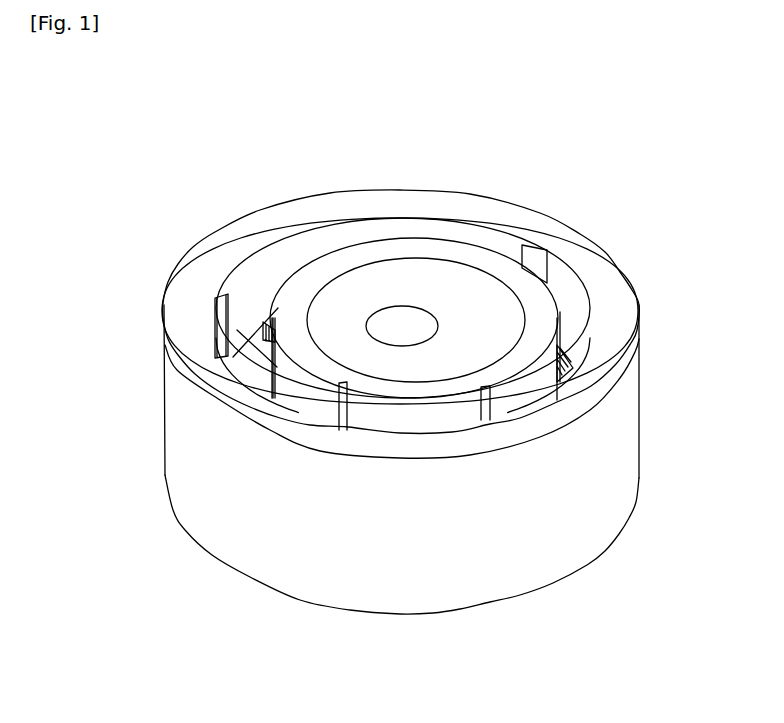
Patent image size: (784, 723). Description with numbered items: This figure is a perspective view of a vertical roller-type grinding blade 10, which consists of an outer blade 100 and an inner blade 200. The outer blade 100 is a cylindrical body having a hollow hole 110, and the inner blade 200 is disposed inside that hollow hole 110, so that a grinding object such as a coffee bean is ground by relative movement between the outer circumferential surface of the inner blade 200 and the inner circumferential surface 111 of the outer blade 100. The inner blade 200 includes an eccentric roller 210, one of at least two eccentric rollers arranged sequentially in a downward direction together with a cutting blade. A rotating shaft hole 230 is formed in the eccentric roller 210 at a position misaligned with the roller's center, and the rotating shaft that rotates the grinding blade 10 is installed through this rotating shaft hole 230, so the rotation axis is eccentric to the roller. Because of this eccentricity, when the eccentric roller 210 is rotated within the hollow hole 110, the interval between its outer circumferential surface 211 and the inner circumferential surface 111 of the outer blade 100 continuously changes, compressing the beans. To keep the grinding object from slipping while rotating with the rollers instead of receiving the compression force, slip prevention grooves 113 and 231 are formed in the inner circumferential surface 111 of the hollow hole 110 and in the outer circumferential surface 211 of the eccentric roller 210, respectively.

The grinding blade 10 is at (650, 207).
The outer blade 100 is at (639, 302).
The hollow hole 110 is at (250, 298).
The inner circumferential surface 111 is at (272, 272).
The slip prevention groove 113 is at (452, 432).
The inner blade 200 is at (462, 292).
The eccentric roller 210 is at (300, 387).
The outer circumferential surface 211 is at (532, 387).
The rotating shaft hole 230 is at (403, 323).
The slip prevention groove 231 is at (322, 413).